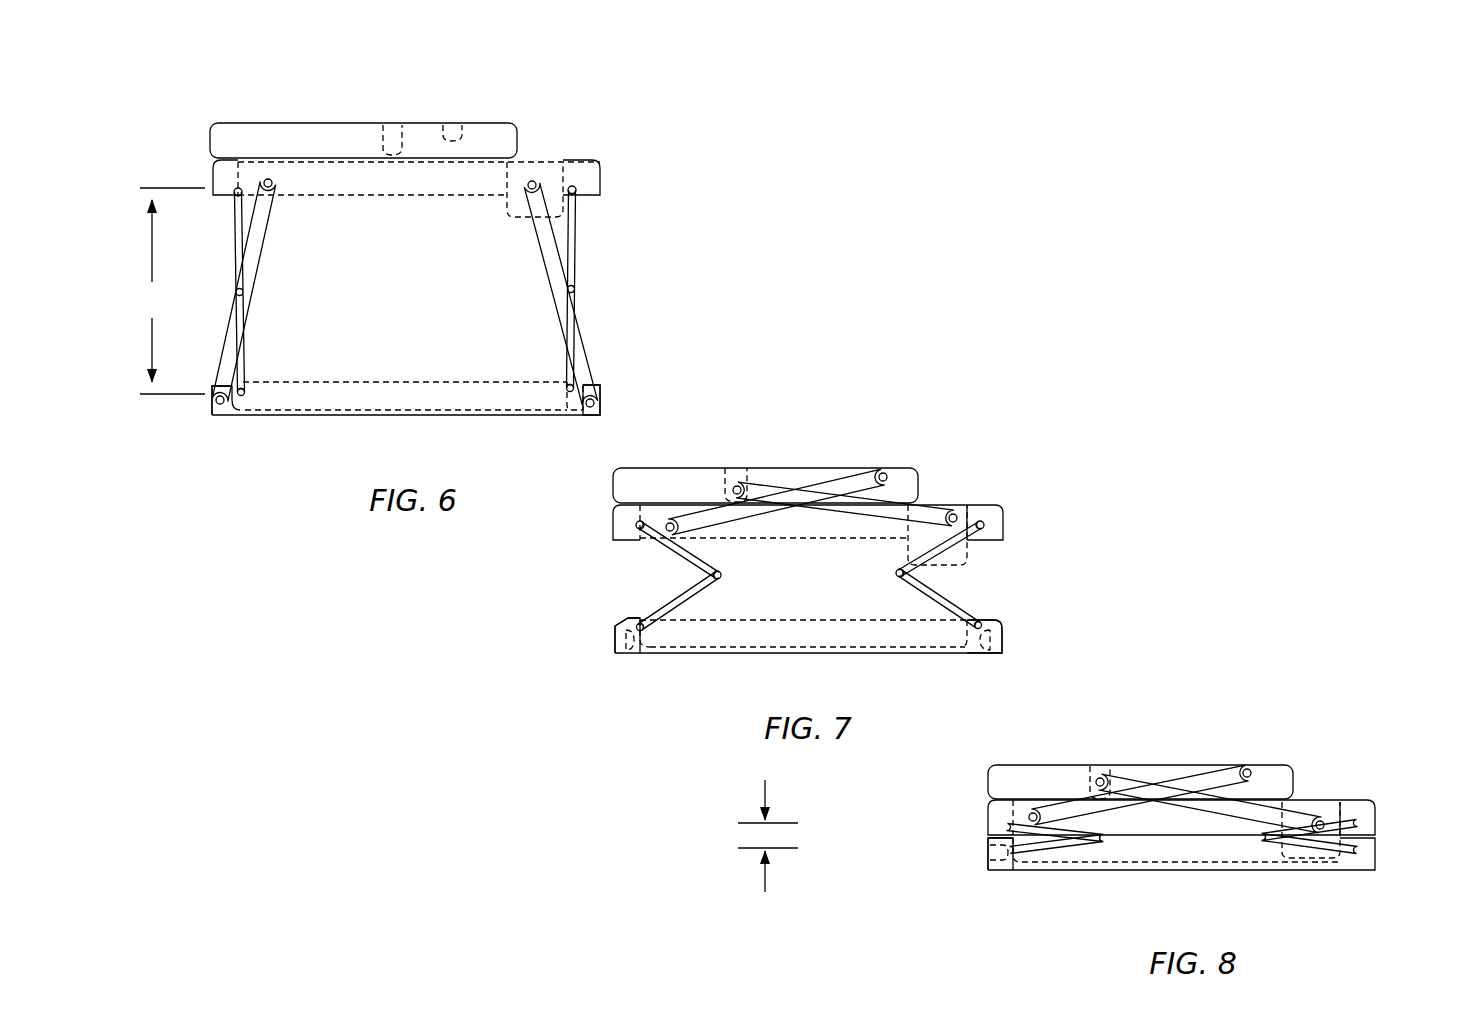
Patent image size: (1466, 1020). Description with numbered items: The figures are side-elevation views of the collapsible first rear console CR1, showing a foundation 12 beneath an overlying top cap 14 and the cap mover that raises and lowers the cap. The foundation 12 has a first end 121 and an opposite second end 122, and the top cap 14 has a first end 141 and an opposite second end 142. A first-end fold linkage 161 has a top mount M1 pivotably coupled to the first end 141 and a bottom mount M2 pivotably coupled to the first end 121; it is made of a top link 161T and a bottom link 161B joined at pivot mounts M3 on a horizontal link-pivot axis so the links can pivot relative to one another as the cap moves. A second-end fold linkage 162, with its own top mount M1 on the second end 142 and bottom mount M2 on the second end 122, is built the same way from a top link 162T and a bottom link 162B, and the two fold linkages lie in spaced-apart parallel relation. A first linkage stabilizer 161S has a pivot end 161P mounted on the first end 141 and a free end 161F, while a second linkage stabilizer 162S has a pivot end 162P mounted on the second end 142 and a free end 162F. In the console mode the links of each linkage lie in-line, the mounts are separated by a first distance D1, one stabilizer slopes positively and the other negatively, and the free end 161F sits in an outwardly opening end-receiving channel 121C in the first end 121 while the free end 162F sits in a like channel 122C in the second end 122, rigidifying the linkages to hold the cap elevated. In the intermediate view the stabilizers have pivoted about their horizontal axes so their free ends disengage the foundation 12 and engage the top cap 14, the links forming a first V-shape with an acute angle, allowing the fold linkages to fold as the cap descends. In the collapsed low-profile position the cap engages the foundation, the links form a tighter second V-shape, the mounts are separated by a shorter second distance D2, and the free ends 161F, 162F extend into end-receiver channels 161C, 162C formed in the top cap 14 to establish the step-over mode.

In FIG. 6, the foundation 12 is at (244, 438).
In FIG. 7, the foundation 12 is at (640, 660).
In FIG. 8, the foundation 12 is at (1020, 877).
In FIG. 6, the top cap 14 is at (208, 124).
In FIG. 7, the top cap 14 is at (608, 507).
In FIG. 8, the top cap 14 is at (975, 790).
In FIG. 6, the first end of foundation 121 is at (230, 418).
In FIG. 7, the end-receiving channel 121C is at (625, 655).
In FIG. 8, the end-receiving channel 121C is at (993, 857).
In FIG. 6, the second end of foundation 122 is at (601, 405).
In FIG. 7, the end-receiving channel 122C is at (1000, 640).
In FIG. 6, the first end of top cap 141 is at (213, 178).
In FIG. 6, the second end of top cap 142 is at (600, 185).
In FIG. 6, the first-end fold linkage 161 is at (245, 314).
In FIG. 7, the first-end fold linkage 161 is at (694, 516).
In FIG. 8, the first-end fold linkage 161 is at (1025, 824).
In FIG. 6, the top link 161T is at (236, 198).
In FIG. 7, the top link 161T is at (662, 543).
In FIG. 8, the top link 161T is at (998, 828).
In FIG. 6, the bottom link 161B is at (239, 385).
In FIG. 7, the bottom link 161B is at (650, 612).
In FIG. 8, the bottom link 161B is at (1002, 855).
In FIG. 6, the first linkage stabilizer 161S is at (257, 250).
In FIG. 7, the first linkage stabilizer 161S is at (860, 485).
In FIG. 8, the first linkage stabilizer 161S is at (1222, 780).
In FIG. 6, the pivot end 161P is at (272, 187).
In FIG. 7, the pivot end 161P is at (676, 530).
In FIG. 6, the free end 161F is at (214, 410).
In FIG. 7, the free end 161F is at (886, 473).
In FIG. 6, the end-receiver channel 161C is at (452, 127).
In FIG. 6, the second-end fold linkage 162 is at (623, 295).
In FIG. 7, the second-end fold linkage 162 is at (910, 512).
In FIG. 8, the second-end fold linkage 162 is at (1267, 809).
In FIG. 6, the top link 162T is at (576, 258).
In FIG. 7, the top link 162T is at (955, 542).
In FIG. 8, the top link 162T is at (1360, 815).
In FIG. 6, the bottom link 162B is at (576, 292).
In FIG. 7, the bottom link 162B is at (975, 620).
In FIG. 8, the bottom link 162B is at (1352, 852).
In FIG. 6, the second linkage stabilizer 162S is at (548, 255).
In FIG. 7, the second linkage stabilizer 162S is at (750, 490).
In FIG. 8, the second linkage stabilizer 162S is at (1122, 790).
In FIG. 6, the pivot end 162P is at (536, 185).
In FIG. 7, the pivot end 162P is at (957, 518).
In FIG. 8, the pivot end 162P is at (1311, 830).
In FIG. 6, the free end 162F is at (594, 398).
In FIG. 7, the free end 162F is at (730, 470).
In FIG. 6, the end-receiver channel 162C is at (392, 128).
In FIG. 6, the top mount M1 is at (240, 190).
In FIG. 7, the top mount M1 is at (642, 522).
In FIG. 6, the bottom mount M2 is at (244, 395).
In FIG. 7, the bottom mount M2 is at (622, 632).
In FIG. 7, the pivot mount M3 is at (720, 580).
In FIG. 6, the first rear console CR1 is at (603, 108).
In FIG. 7, the first rear console CR1 is at (948, 450).
In FIG. 8, the first rear console CR1 is at (1302, 750).
In FIG. 6, the first distance D1 is at (172, 291).
In FIG. 8, the second distance D2 is at (768, 836).